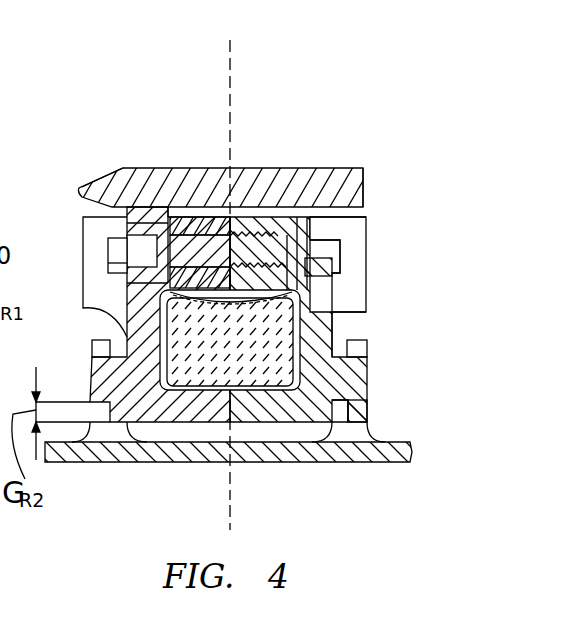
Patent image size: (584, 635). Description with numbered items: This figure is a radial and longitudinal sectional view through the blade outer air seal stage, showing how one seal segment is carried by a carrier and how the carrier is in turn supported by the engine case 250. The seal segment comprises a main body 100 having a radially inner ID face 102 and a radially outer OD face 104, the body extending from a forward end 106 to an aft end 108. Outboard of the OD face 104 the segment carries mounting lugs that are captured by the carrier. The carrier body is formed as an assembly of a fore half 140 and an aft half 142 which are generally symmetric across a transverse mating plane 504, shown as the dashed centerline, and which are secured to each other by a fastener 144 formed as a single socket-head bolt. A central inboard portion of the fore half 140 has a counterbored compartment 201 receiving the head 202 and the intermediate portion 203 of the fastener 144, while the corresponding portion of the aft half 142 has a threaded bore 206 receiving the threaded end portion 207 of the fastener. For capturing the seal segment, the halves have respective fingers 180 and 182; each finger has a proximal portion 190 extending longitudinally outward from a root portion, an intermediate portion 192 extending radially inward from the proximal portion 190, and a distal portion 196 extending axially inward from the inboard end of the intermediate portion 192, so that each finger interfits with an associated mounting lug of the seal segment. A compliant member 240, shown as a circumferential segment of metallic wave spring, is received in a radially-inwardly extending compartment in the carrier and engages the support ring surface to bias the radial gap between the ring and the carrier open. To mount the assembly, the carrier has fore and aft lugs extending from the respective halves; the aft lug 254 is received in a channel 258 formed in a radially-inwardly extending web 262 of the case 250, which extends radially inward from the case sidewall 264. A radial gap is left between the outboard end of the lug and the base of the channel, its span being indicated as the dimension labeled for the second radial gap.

The main body 100 is at (240, 207).
The ID face 102 is at (152, 166).
The OD face 104 is at (342, 243).
The forward end 106 is at (78, 188).
The aft end 108 is at (362, 190).
The fore half 140 is at (128, 330).
The aft half 142 is at (332, 318).
The fastener 144 is at (200, 233).
The finger 180 is at (74, 279).
The finger 182 is at (366, 268).
The proximal portion 190 is at (319, 315).
The intermediate portion 192 is at (348, 285).
The distal portion 196 is at (334, 262).
The counterbored compartment 201 is at (276, 234).
The head 202 is at (127, 210).
The intermediate portion 203 is at (226, 215).
The threaded bore 206 is at (334, 215).
The threaded end portion 207 is at (282, 262).
The compliant member 240 is at (193, 312).
The engine case 250 is at (322, 457).
The aft lug 254 is at (360, 386).
The channel 258 is at (354, 408).
The web 262 is at (318, 446).
The sidewall 264 is at (199, 462).
The transverse mating plane 504 is at (231, 527).